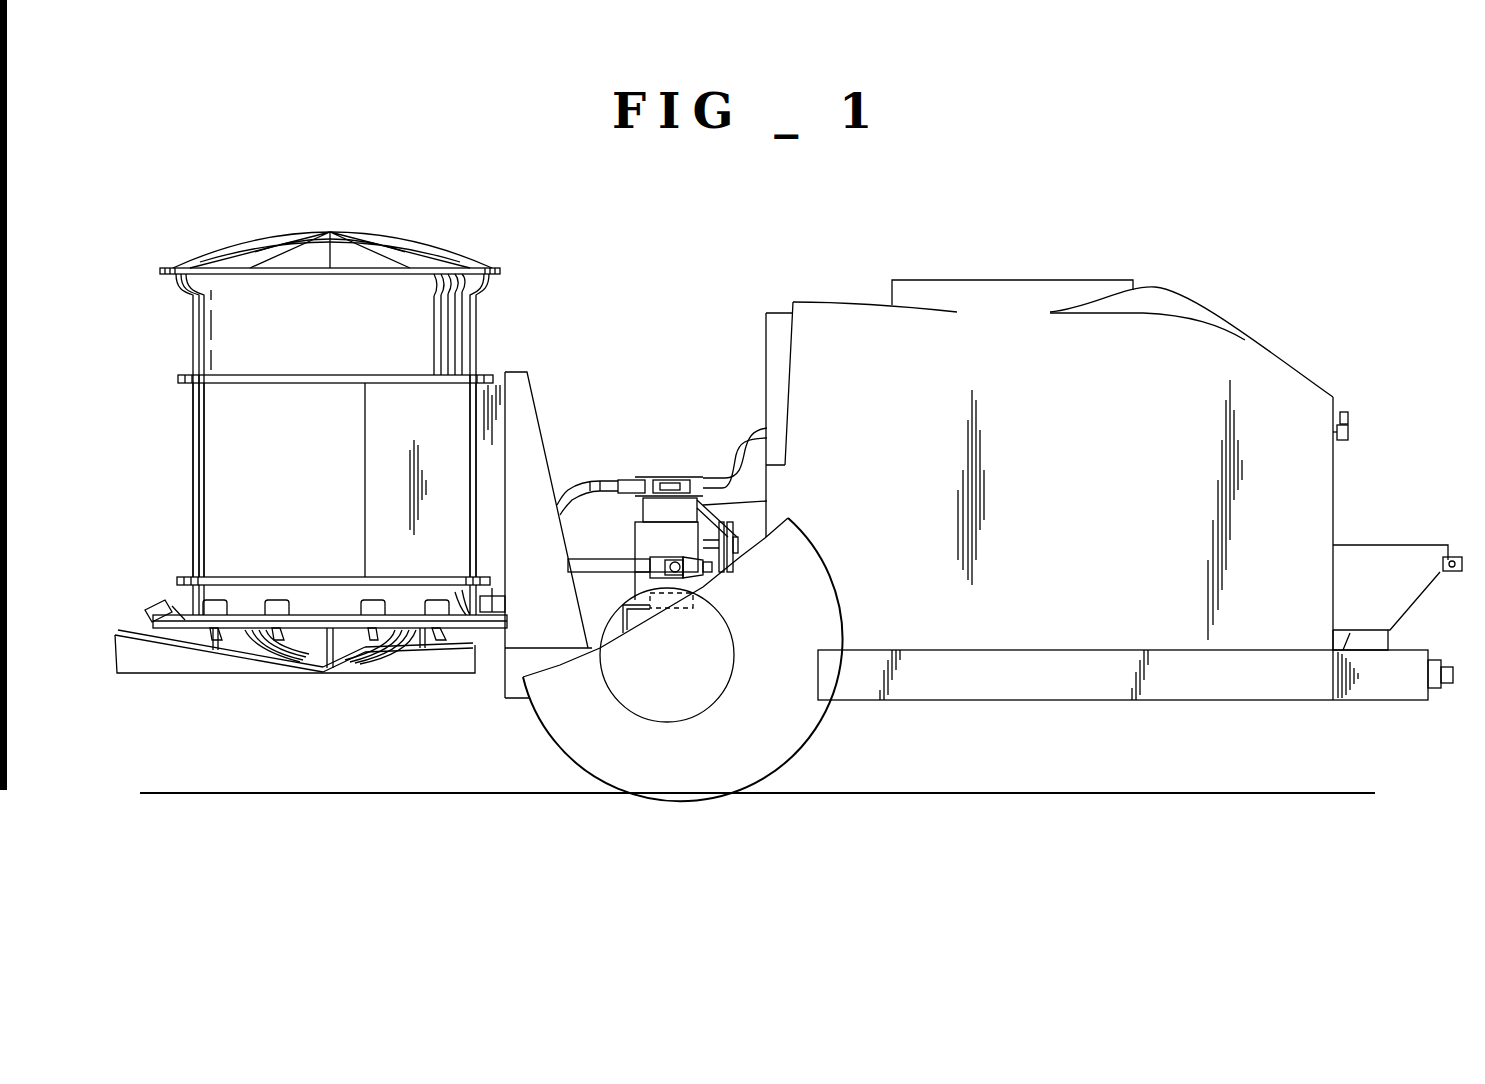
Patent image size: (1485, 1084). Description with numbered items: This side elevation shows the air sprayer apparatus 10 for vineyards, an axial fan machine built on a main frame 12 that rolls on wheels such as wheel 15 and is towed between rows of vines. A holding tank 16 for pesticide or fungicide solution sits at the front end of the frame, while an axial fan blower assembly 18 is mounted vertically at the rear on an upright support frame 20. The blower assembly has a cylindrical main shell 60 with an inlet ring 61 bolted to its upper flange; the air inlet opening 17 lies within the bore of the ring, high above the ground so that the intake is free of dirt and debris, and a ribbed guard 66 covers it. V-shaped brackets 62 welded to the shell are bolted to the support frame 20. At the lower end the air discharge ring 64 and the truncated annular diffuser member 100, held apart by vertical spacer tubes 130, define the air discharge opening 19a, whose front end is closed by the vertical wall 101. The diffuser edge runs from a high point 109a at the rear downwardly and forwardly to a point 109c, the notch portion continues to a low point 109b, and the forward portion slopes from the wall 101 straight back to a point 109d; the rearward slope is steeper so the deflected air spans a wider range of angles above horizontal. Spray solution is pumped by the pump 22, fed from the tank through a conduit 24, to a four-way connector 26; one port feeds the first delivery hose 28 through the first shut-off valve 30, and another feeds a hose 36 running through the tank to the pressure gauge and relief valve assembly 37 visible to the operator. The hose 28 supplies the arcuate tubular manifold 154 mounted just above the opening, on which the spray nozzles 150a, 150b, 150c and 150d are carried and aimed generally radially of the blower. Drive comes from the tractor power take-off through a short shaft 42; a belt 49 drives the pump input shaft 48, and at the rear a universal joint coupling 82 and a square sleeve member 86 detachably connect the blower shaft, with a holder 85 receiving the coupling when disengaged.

The air sprayer apparatus 10 is at (705, 228).
The main frame 12 is at (1012, 684).
The wheel 15 is at (782, 674).
The holding tank 16 is at (1079, 441).
The air inlet opening 17 is at (467, 262).
The blower assembly 18 is at (484, 330).
The air discharge opening 19a is at (188, 640).
The upright support frame 20 is at (518, 398).
The pump 22 is at (640, 540).
The conduit 24 is at (730, 507).
The four-way connector 26 is at (670, 482).
The first delivery hose 28 is at (572, 479).
The first shut-off valve 30 is at (622, 480).
The hose 36 is at (735, 485).
The pressure gauge and relief valve assembly 37 is at (1346, 418).
The short shaft 42 is at (1456, 574).
The input shaft 48 is at (745, 536).
The belt 49 is at (724, 558).
The cylindrical main shell 60 is at (196, 440).
The inlet ring 61 is at (200, 318).
The bracket 62 is at (459, 472).
The air discharge ring 64 is at (192, 594).
The ribbed guard 66 is at (402, 234).
The universal joint coupling 82 is at (705, 580).
The holder 85 is at (657, 597).
The square sleeve member 86 is at (578, 567).
The diffuser member 100 is at (157, 670).
The vertical wall 101 is at (500, 627).
The high point 109a is at (152, 637).
The low point 109b is at (333, 670).
The point 109c is at (287, 667).
The point 109d is at (400, 655).
The spacer tube 130 is at (212, 650).
The spray nozzle 150a is at (150, 614).
The spray nozzle 150b is at (216, 600).
The spray nozzle 150c is at (277, 600).
The spray nozzle 150d is at (370, 600).
The tubular manifold 154 is at (492, 604).